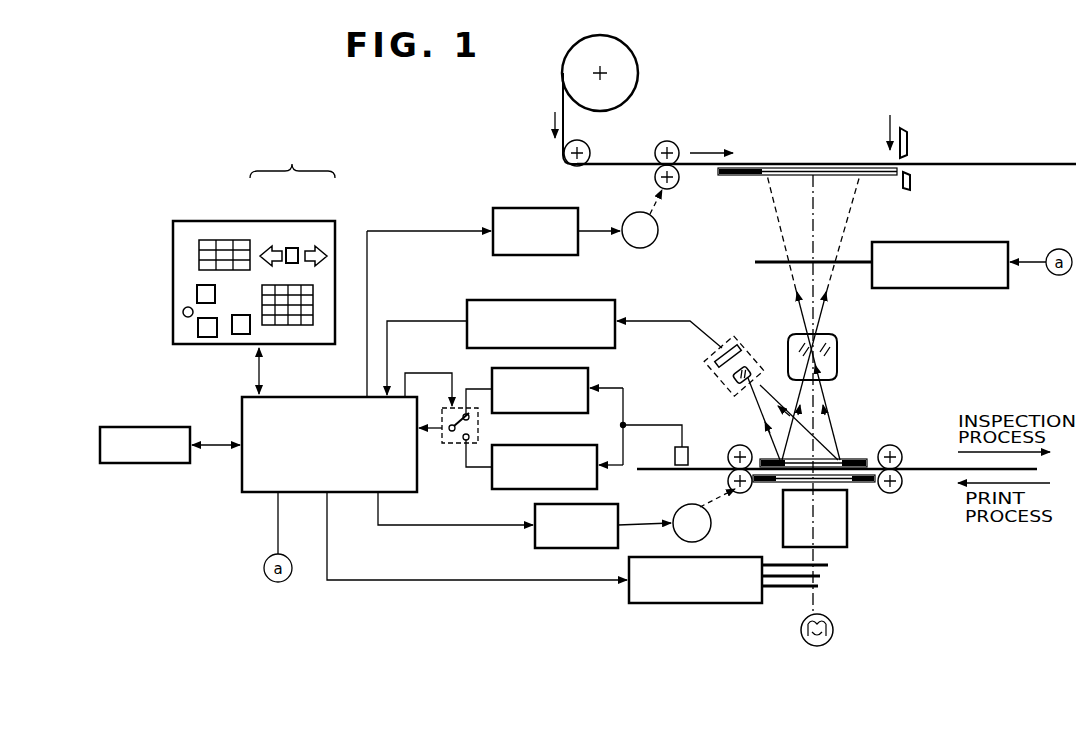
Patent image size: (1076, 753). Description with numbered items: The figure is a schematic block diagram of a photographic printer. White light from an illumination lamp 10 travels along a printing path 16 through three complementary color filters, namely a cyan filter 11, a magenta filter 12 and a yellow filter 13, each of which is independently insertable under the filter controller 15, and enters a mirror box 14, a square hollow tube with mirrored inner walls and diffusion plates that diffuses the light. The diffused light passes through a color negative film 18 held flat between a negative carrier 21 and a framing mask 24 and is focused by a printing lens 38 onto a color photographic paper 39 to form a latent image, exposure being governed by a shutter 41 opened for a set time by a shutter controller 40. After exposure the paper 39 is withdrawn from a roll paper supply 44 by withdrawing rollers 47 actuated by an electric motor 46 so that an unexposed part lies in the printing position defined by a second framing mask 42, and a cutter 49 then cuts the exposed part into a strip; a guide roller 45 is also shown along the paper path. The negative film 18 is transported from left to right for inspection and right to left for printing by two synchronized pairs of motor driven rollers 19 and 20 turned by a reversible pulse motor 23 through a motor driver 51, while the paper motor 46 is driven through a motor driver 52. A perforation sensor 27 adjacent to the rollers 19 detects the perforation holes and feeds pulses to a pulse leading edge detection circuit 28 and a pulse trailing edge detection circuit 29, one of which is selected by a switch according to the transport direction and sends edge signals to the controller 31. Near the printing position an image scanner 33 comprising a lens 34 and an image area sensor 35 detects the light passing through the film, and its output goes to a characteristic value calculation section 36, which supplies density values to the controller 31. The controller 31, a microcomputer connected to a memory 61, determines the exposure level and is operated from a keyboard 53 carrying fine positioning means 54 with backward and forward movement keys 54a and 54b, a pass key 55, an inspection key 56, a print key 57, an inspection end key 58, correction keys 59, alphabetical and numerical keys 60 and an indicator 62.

The illumination lamp 10 is at (833, 638).
The cyan color filter 11 is at (800, 593).
The magenta color filter 12 is at (780, 590).
The yellow color filter 13 is at (822, 572).
The mirror box 14 is at (840, 530).
The filter controller 15 is at (697, 604).
The printing path 16 is at (817, 552).
The negative film 18 is at (920, 467).
The motor driven rollers 19 is at (746, 493).
The motor driven rollers 20 is at (902, 489).
The negative carrier 21 is at (868, 484).
The reversible pulse motor 23 is at (710, 533).
The framing mask 24 is at (858, 458).
The perforation sensor 27 is at (690, 456).
The pulse leading edge detection circuit 28 is at (588, 378).
The pulse trailing edge detection circuit 29 is at (492, 483).
The controller 31 is at (242, 494).
The image scanner 33 is at (748, 350).
The lens 34 is at (736, 382).
The image area sensor 35 is at (730, 349).
The characteristic value calculation section 36 is at (588, 300).
The printing lens 38 is at (837, 352).
The color photographic paper 39 is at (996, 163).
The shutter controller 40 is at (947, 242).
The shutter 41 is at (760, 262).
The framing mask 42 is at (880, 176).
The roll paper supply 44 is at (632, 80).
The guide roller 45 is at (564, 155).
The electric motor 46 is at (653, 242).
The withdrawing rollers 47 is at (678, 184).
The cutter 49 is at (905, 128).
The motor driver 51 is at (535, 546).
The motor driver 52 is at (533, 208).
The keyboard 53 is at (184, 216).
The fine positioning means 54 is at (292, 161).
The backward movement key 54a is at (271, 247).
The forward movement key 54b is at (318, 247).
The pass key 55 is at (295, 263).
The inspection key 56 is at (197, 294).
The print key 57 is at (198, 330).
The inspection end key 58 is at (241, 336).
The correction keys 59 is at (222, 240).
The alphabetical and numerical keys 60 is at (297, 326).
The memory 61 is at (144, 465).
The indicator 62 is at (183, 314).